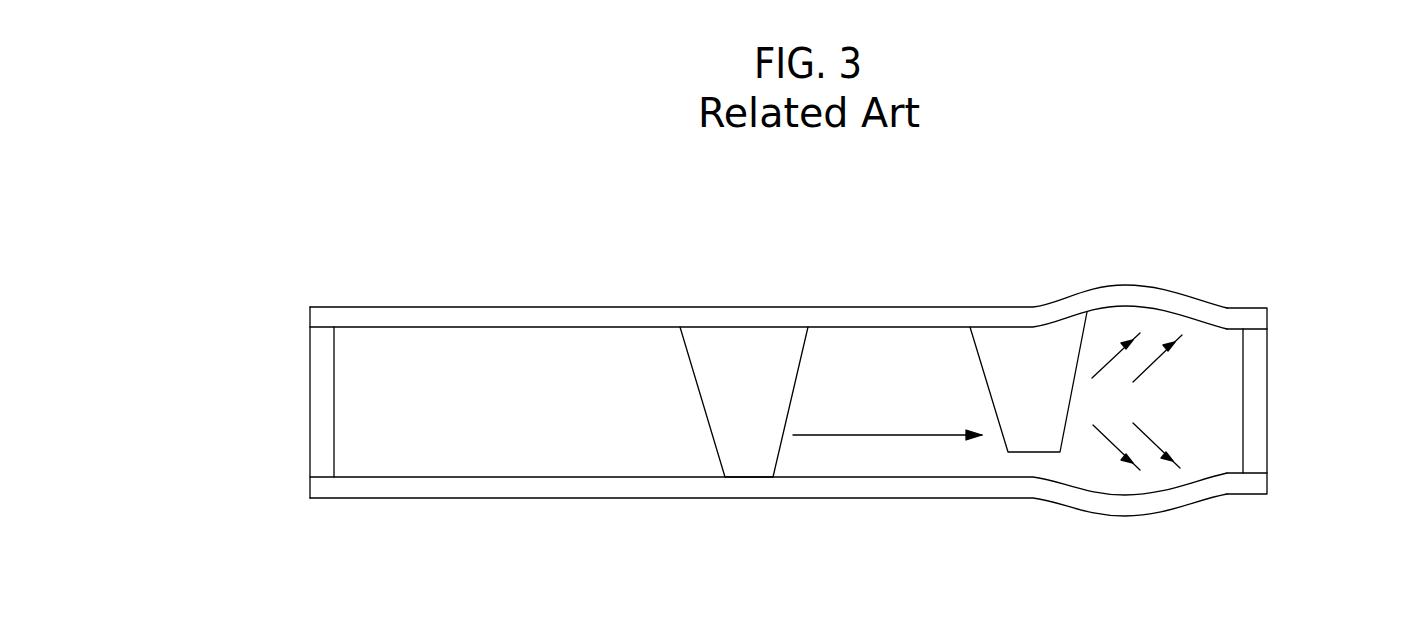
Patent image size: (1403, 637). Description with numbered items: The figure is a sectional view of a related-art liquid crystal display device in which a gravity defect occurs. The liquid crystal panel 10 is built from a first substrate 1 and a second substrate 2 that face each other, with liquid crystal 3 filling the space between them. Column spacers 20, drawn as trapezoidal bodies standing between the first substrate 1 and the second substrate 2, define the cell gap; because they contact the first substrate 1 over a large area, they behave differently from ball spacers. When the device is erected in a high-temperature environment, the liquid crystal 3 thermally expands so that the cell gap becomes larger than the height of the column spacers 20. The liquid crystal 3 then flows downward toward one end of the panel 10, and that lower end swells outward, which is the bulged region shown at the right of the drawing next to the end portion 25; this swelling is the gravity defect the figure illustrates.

The first substrate 1 is at (318, 488).
The second substrate 2 is at (318, 316).
The liquid crystal 3 is at (583, 347).
The liquid crystal panel 10 is at (233, 307).
The column spacers 20 is at (757, 340).
The end reflector block 25 is at (1252, 363).